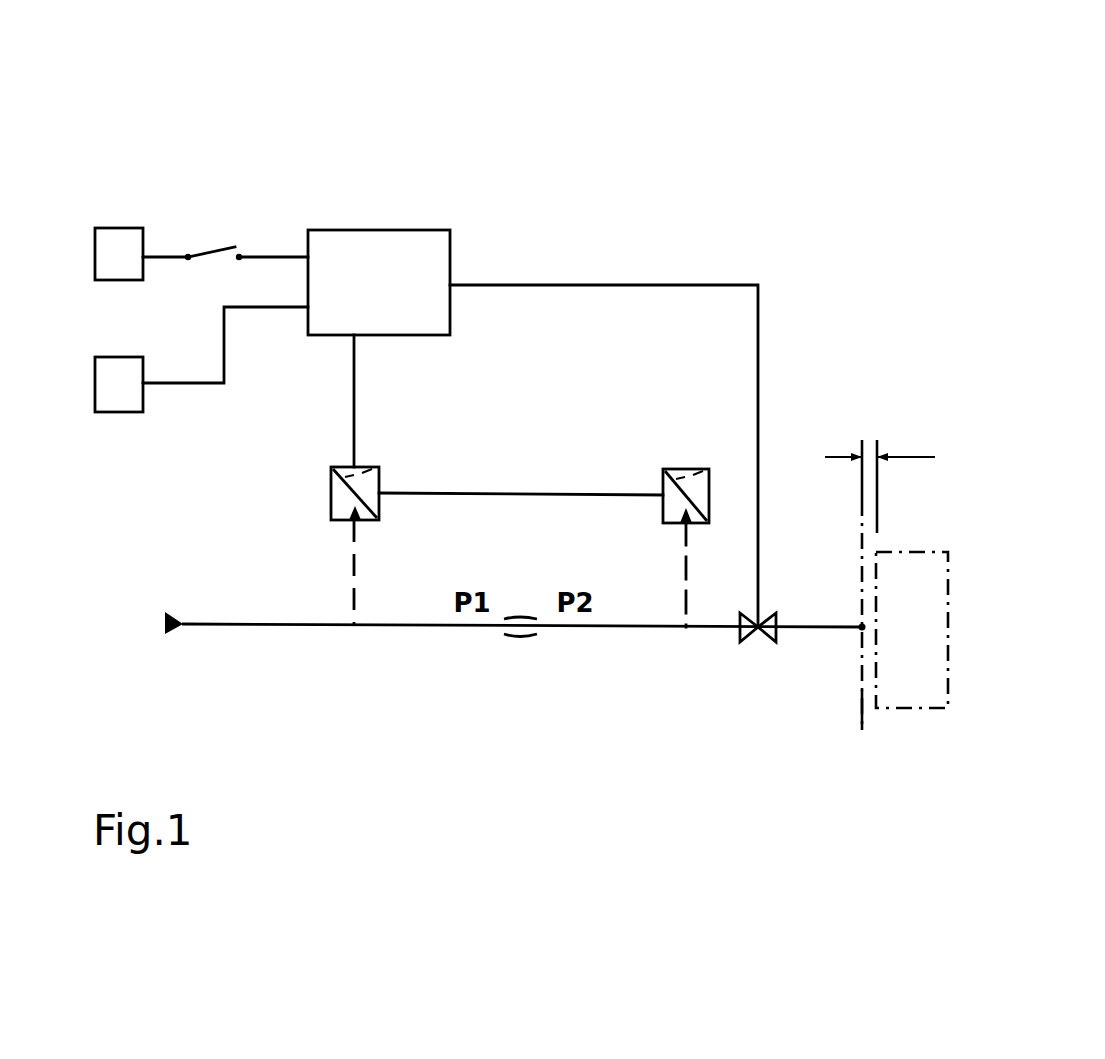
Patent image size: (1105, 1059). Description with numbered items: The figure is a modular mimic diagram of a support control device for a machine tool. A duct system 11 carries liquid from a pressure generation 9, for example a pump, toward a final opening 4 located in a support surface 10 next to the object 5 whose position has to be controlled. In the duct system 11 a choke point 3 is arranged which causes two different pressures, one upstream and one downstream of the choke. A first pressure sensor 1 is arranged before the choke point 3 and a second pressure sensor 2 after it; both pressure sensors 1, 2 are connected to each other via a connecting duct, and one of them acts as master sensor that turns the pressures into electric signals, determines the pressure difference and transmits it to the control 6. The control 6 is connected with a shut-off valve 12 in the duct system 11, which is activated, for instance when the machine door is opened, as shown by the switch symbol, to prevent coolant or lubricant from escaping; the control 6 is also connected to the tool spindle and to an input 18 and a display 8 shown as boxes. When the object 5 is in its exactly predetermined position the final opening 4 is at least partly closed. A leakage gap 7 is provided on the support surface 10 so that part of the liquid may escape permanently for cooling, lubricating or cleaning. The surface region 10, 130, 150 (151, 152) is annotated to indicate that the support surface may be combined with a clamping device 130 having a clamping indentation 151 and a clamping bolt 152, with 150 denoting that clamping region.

The first pressure sensor 1 is at (331, 493).
The second pressure sensor 2 is at (700, 494).
The choke point 3 is at (520, 640).
The final opening 4 is at (860, 631).
The object 5 is at (922, 622).
The control 6 is at (378, 250).
The leakage gap 7 is at (869, 450).
The display unit 8 is at (117, 400).
The generation of pressure 9 is at (168, 636).
The support surface 10 is at (865, 715).
The duct system 11 is at (300, 627).
The shut-off valve 12 is at (758, 632).
The input unit / switch 18 is at (122, 238).
The clamping device 130 is at (918, 726).
The surface region 150 is at (942, 731).
The clamping indentation 151 is at (964, 736).
The clamping bolt 152 is at (983, 741).